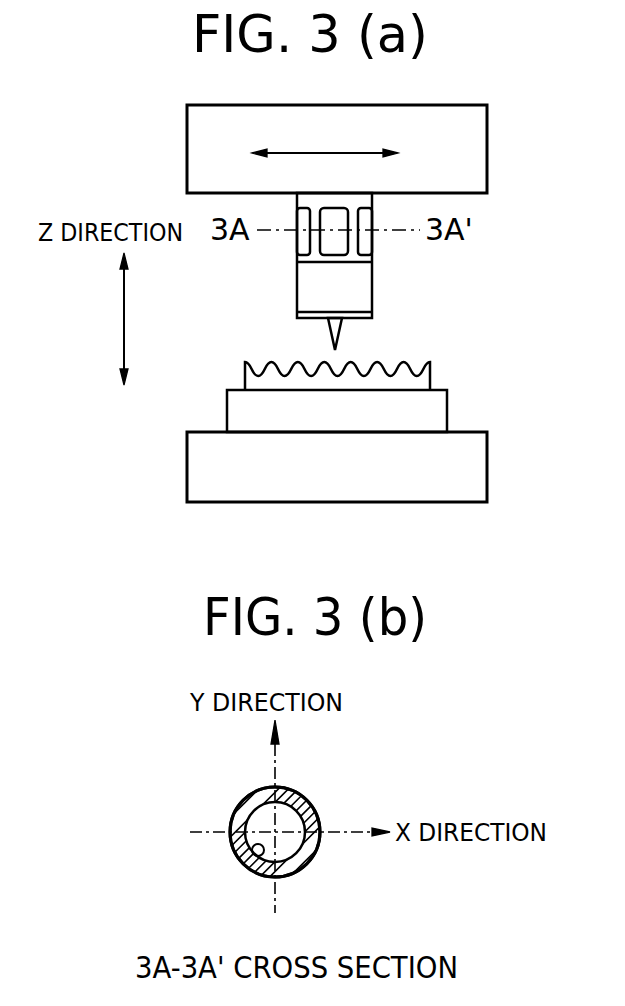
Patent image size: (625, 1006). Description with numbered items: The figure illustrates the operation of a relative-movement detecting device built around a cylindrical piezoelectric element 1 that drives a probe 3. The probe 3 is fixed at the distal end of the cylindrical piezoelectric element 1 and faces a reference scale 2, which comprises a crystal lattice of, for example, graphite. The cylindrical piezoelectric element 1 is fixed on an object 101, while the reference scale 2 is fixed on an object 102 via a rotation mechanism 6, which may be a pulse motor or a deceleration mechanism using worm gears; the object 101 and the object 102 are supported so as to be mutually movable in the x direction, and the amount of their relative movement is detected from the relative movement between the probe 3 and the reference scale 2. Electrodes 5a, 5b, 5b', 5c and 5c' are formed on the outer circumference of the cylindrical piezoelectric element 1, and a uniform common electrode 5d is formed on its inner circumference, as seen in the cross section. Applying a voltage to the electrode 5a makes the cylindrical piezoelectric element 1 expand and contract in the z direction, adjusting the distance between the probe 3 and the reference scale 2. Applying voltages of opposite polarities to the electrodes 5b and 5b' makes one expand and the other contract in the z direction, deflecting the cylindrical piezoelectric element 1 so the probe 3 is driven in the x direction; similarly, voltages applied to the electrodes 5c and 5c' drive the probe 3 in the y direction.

In FIG. 3A, the cylindrical piezoelectric element 1 is at (284, 325).
In FIG. 3B, the cylindrical piezoelectric element 1 is at (246, 800).
In FIG. 3A, the reference scale 2 is at (430, 374).
In FIG. 3A, the probe 3 is at (349, 338).
In FIG. 3A, the electrode 5a is at (358, 287).
In FIG. 3A, the electrode 5b is at (269, 244).
In FIG. 3B, the electrode 5b is at (201, 816).
In FIG. 3A, the electrode 5b' is at (410, 244).
In FIG. 3B, the electrode 5b' is at (346, 821).
In FIG. 3A, the electrode 5c is at (288, 262).
In FIG. 3B, the electrode 5c is at (299, 885).
In FIG. 3B, the electrode 5c' is at (301, 772).
In FIG. 3B, the common electrode 5d is at (247, 860).
In FIG. 3A, the rotation mechanism 6 is at (433, 412).
In FIG. 3A, the object 101 is at (488, 142).
In FIG. 3A, the object 102 is at (470, 467).